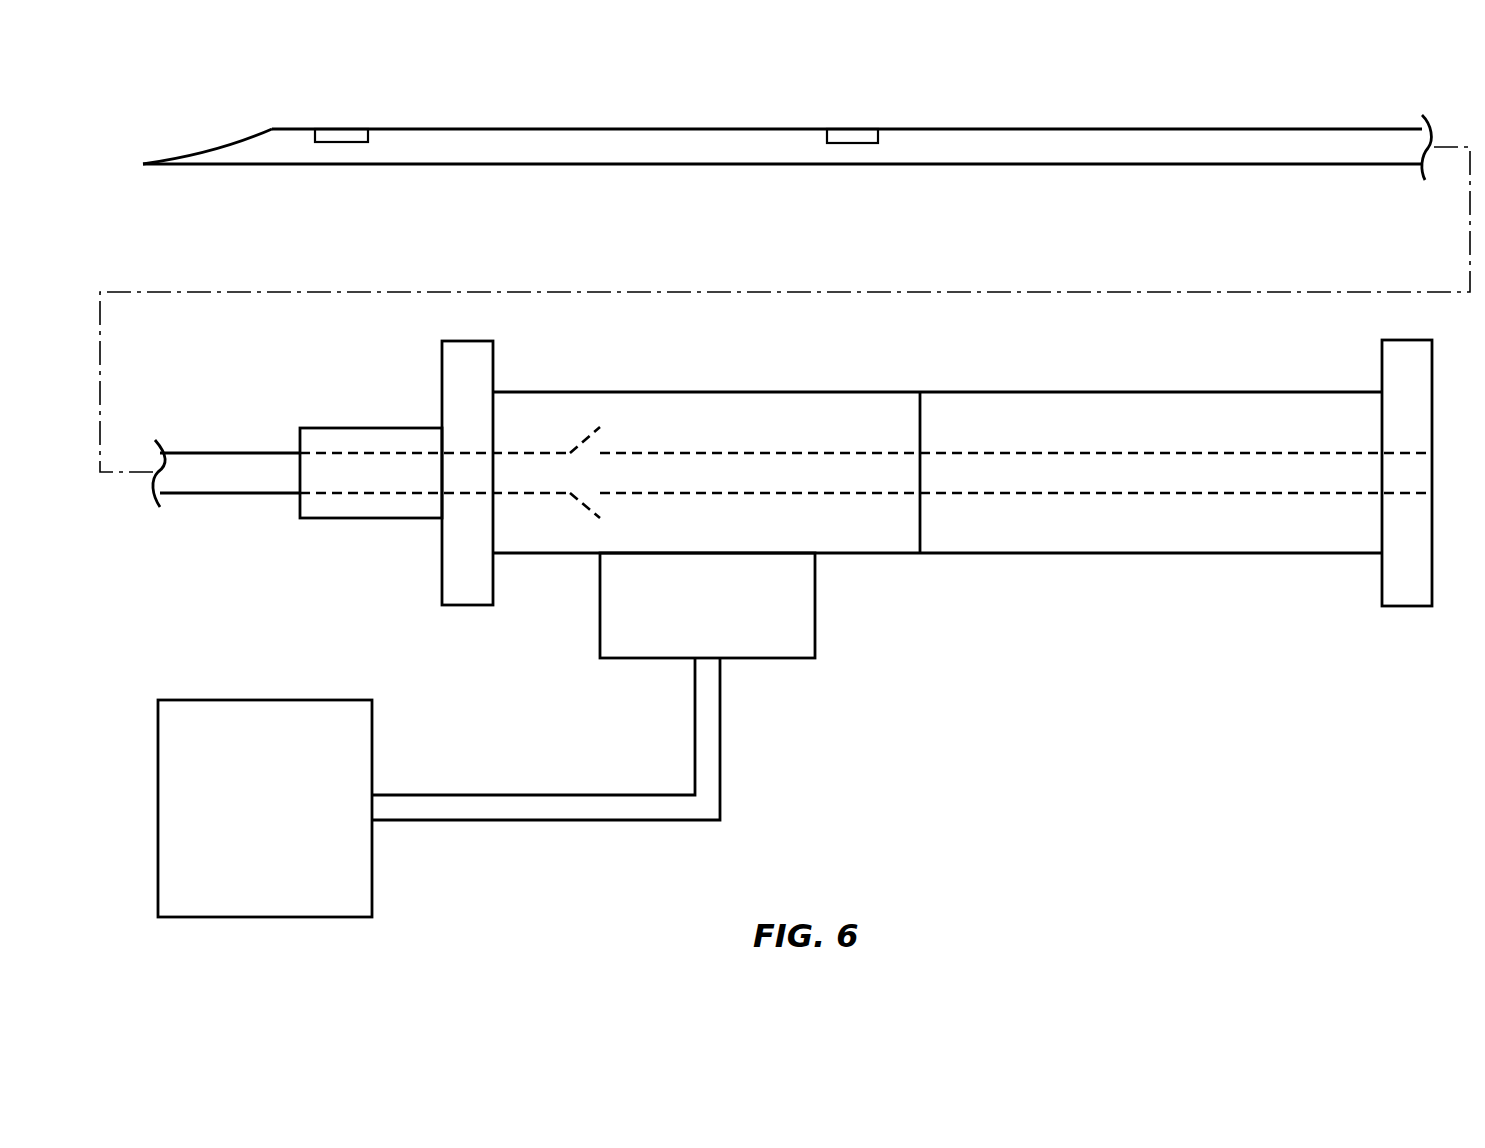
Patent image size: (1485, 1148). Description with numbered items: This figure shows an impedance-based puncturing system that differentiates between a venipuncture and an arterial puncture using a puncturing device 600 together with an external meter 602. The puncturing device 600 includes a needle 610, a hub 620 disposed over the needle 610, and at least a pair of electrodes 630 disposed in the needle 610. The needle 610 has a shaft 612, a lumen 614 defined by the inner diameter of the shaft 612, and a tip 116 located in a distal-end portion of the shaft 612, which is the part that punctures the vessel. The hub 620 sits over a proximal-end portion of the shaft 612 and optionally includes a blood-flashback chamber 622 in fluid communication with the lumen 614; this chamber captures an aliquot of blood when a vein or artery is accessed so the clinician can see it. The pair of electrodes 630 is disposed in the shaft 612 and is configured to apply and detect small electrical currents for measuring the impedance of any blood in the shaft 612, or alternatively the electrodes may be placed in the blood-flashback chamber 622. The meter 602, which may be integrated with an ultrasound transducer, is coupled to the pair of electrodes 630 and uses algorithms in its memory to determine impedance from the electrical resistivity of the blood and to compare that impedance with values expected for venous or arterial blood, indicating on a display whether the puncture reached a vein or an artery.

The tip 116 is at (234, 138).
The puncturing device 600 is at (920, 795).
The external meter 602 is at (266, 690).
The needle 610 is at (1103, 106).
The shaft 612 is at (197, 458).
The lumen 614 is at (290, 473).
The hub 620 is at (1137, 587).
The blood-flashback chamber 622 is at (698, 437).
The pair of electrodes 630 is at (840, 136).